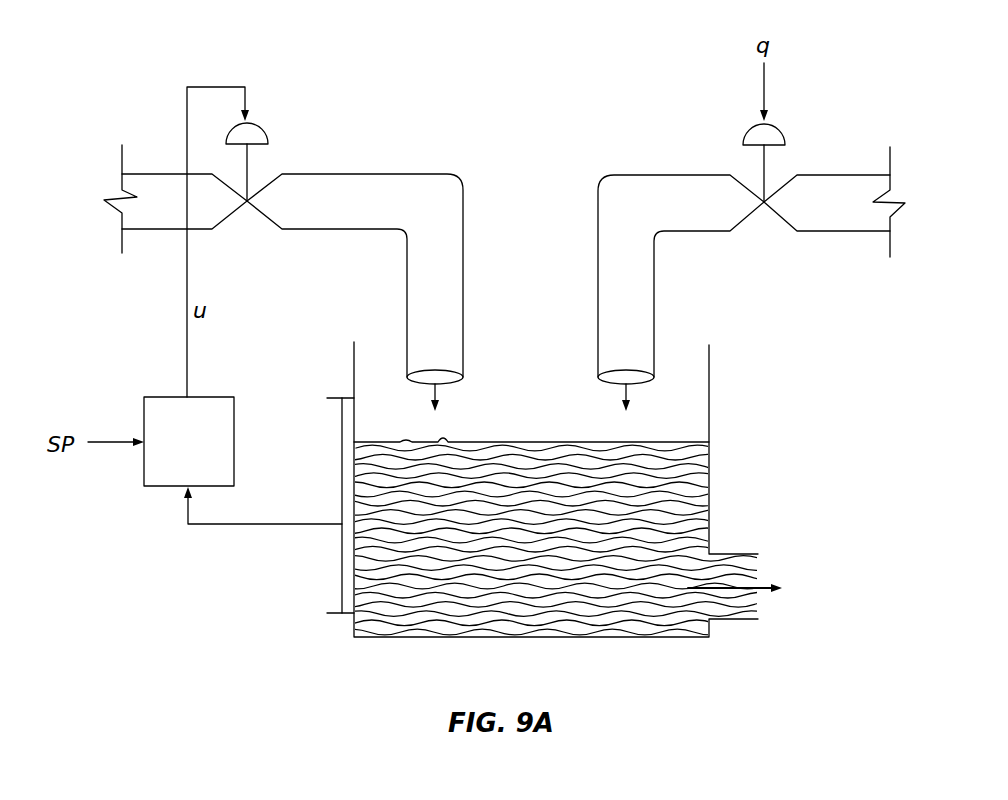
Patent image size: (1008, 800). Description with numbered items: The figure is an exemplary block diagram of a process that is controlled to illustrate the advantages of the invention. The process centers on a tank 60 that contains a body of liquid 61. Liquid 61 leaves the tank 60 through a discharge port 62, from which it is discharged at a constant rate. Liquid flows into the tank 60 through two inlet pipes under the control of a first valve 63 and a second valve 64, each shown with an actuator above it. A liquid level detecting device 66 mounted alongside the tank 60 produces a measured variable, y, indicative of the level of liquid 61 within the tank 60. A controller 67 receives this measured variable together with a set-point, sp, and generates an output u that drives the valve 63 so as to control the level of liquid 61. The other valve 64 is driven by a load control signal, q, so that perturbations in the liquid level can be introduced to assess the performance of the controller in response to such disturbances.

The tank 60 is at (643, 638).
The liquid 61 is at (540, 553).
The discharge port 62 is at (753, 591).
The valve 63 is at (246, 206).
The valve 64 is at (763, 207).
The liquid level detecting device 66 is at (340, 545).
The controller 67 is at (222, 437).